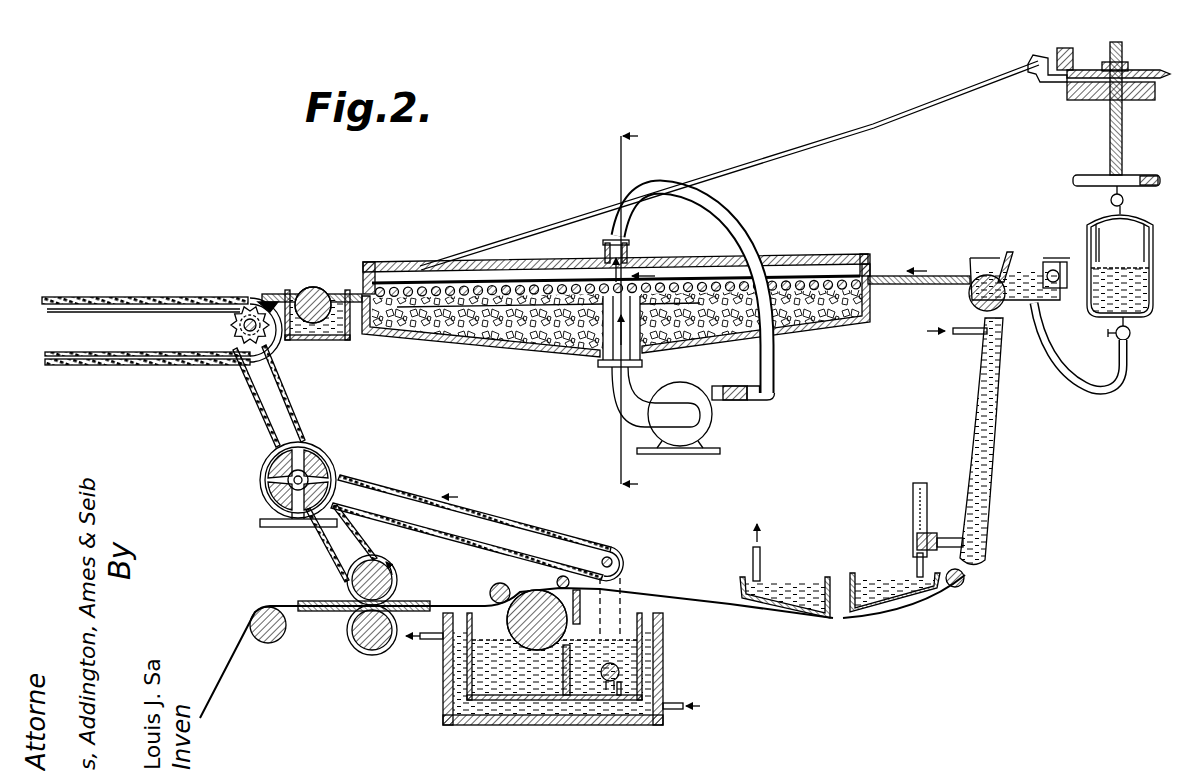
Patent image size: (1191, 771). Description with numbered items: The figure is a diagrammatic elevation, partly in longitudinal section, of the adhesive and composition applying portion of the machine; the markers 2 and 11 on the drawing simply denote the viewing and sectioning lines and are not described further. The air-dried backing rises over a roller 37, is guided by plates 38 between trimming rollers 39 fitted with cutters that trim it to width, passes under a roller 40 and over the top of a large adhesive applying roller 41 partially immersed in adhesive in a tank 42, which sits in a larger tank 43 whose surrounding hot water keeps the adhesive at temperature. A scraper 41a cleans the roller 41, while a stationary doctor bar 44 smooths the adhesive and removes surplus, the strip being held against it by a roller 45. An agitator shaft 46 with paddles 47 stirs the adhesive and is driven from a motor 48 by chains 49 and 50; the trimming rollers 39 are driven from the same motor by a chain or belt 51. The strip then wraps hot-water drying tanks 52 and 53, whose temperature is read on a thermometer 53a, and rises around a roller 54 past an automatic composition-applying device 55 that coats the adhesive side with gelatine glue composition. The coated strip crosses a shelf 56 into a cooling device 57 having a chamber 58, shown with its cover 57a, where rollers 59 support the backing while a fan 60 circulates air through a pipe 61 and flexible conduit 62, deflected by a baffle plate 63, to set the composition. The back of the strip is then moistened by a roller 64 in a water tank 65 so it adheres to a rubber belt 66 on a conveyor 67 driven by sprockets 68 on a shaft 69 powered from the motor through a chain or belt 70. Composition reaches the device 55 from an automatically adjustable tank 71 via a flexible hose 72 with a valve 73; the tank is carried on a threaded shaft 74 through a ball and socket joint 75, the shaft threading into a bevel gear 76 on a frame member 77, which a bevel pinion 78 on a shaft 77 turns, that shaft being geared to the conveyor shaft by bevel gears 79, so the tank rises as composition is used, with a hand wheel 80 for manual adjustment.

The section line 2-2 indicator 2 is at (30, 298).
The section line 11- 11 is at (643, 309).
The roller 37 is at (272, 641).
The plates 38 is at (318, 601).
The trimming rollers 39 is at (350, 631).
The roller 40 is at (491, 588).
The adhesive applying roller 41 is at (526, 592).
The scraper 41a is at (570, 652).
The tank 42 is at (464, 661).
The larger tank 43 is at (441, 695).
The stationary doctor bar 44 is at (581, 602).
The roller 45 is at (559, 580).
The agitator shaft 46 is at (620, 690).
The paddles 47 is at (621, 670).
The motor 48 is at (330, 465).
The chain 49 is at (516, 518).
The chain 50 is at (624, 603).
The chain or belt 51 is at (318, 538).
The drying tank 52 is at (819, 575).
The drying tank 53 is at (973, 425).
The thermometer 53a is at (912, 488).
The roller 54 is at (969, 296).
The automatic composition-applying device 55 is at (1031, 257).
The shelf 56 is at (912, 286).
The cooling device 57 is at (505, 349).
The hopper cover 57a is at (409, 265).
The chamber 58 is at (561, 313).
The rollers 59 is at (483, 287).
The fan 60 is at (679, 398).
The pipe 61 is at (612, 398).
The flexible conduit 62 is at (743, 246).
The baffle plate 63 is at (655, 290).
The roller 64 is at (316, 324).
The tank 65 is at (348, 341).
The rubber belt 66 is at (108, 305).
The conveyor 67 is at (184, 306).
The sprockets 68 is at (229, 326).
The shaft 69 is at (232, 356).
The chain or belt 70 is at (258, 402).
The automatically adjustable tank 71 is at (1156, 267).
The flexible hose 72 is at (1066, 385).
The valve 73 is at (1131, 334).
The threaded shaft 74 is at (1108, 136).
The ball and socket joint 75 is at (1110, 201).
The bevel gear 76 is at (1146, 70).
The frame member / shaft 77 is at (933, 103).
The bevel pinion 78 is at (1063, 48).
The bevel gears 79 is at (253, 293).
The hand wheel 80 is at (1076, 179).